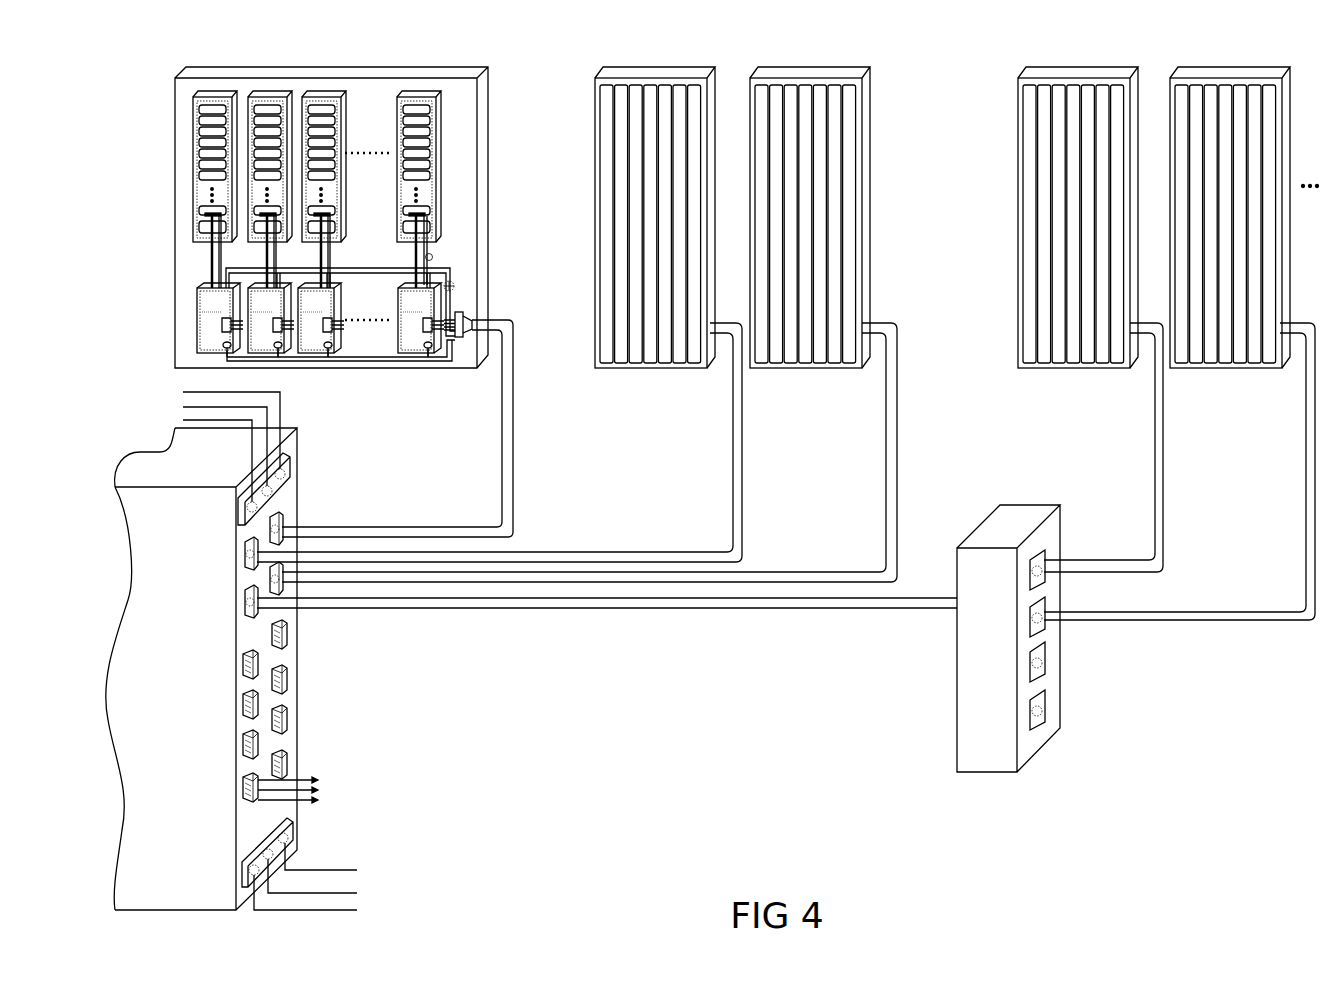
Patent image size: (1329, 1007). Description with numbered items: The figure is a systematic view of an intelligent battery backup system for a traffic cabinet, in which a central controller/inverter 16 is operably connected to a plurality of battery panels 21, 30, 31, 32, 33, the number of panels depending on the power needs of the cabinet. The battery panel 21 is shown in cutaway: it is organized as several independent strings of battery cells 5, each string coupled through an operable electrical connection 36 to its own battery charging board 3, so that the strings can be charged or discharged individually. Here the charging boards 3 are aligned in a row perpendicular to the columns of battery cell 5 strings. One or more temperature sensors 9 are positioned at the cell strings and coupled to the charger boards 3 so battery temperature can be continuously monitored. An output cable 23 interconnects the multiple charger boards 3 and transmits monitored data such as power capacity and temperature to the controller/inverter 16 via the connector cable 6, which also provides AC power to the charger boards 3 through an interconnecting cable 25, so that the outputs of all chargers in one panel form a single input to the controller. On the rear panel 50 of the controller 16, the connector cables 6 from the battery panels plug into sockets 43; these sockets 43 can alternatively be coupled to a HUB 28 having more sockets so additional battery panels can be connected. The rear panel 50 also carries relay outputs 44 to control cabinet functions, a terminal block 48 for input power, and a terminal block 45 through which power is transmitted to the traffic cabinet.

The battery charging board 3 is at (210, 303).
The battery cell 5 is at (208, 108).
The connector cable 6 is at (404, 424).
The temperature sensor 9 is at (210, 212).
The controller/inverter 16 is at (178, 887).
The battery panel 21 is at (486, 92).
The output cable 23 is at (455, 285).
The interconnecting cable 25 is at (382, 359).
The HUB 28 is at (1008, 520).
The battery panel 30 is at (617, 77).
The battery panel 31 is at (857, 75).
The battery panel 32 is at (1040, 75).
The battery panel 33 is at (1288, 75).
The electrical connection 36 is at (433, 257).
The socket 43 is at (287, 517).
The relay output 44 is at (298, 673).
The terminal block 45 is at (295, 838).
The terminal block 48 is at (292, 471).
The rear panel 50 is at (288, 803).